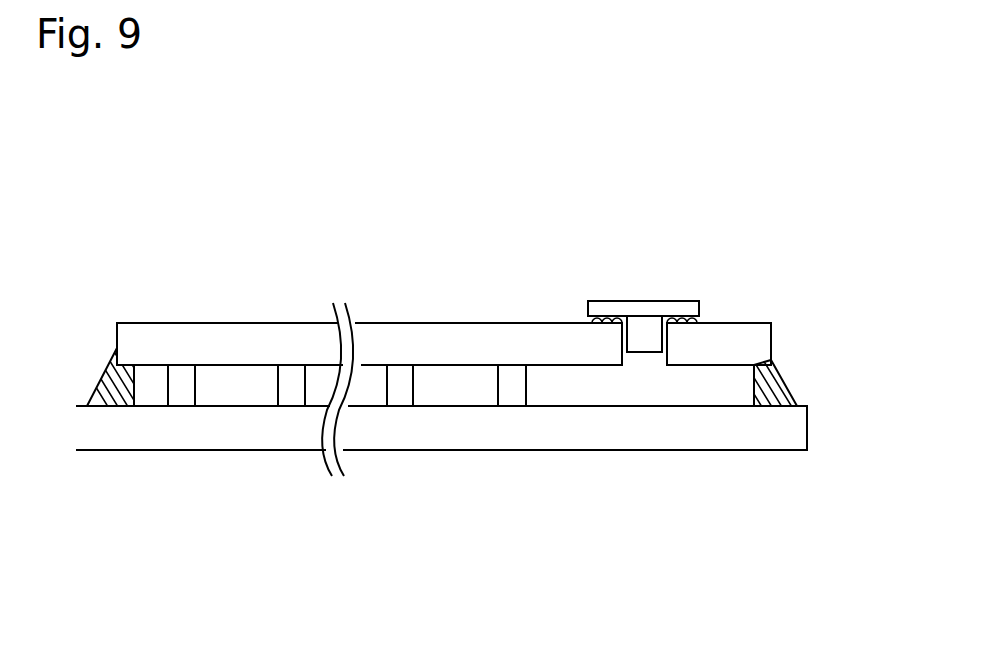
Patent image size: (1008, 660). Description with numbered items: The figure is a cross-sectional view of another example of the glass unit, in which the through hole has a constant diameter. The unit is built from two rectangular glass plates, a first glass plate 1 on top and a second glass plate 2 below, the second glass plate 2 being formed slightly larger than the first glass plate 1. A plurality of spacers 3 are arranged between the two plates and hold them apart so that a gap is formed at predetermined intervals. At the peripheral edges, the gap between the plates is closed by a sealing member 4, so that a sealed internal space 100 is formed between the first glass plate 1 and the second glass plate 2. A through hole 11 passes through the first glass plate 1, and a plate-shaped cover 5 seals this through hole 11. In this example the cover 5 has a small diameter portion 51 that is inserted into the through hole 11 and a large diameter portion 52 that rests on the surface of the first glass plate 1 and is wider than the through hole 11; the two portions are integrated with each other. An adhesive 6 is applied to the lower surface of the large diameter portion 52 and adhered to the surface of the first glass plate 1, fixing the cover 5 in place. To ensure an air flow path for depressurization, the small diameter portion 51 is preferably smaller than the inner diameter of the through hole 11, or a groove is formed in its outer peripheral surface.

The first glass plate 1 is at (196, 333).
The second glass plate 2 is at (393, 440).
The spacers 3 is at (292, 387).
The sealing member 4 is at (104, 378).
The cover 5 is at (616, 355).
The adhesive 6 is at (588, 320).
The through hole 11 is at (626, 360).
The small diameter portion 51 is at (647, 345).
The large diameter portion 52 is at (643, 308).
The internal space 100 is at (471, 399).